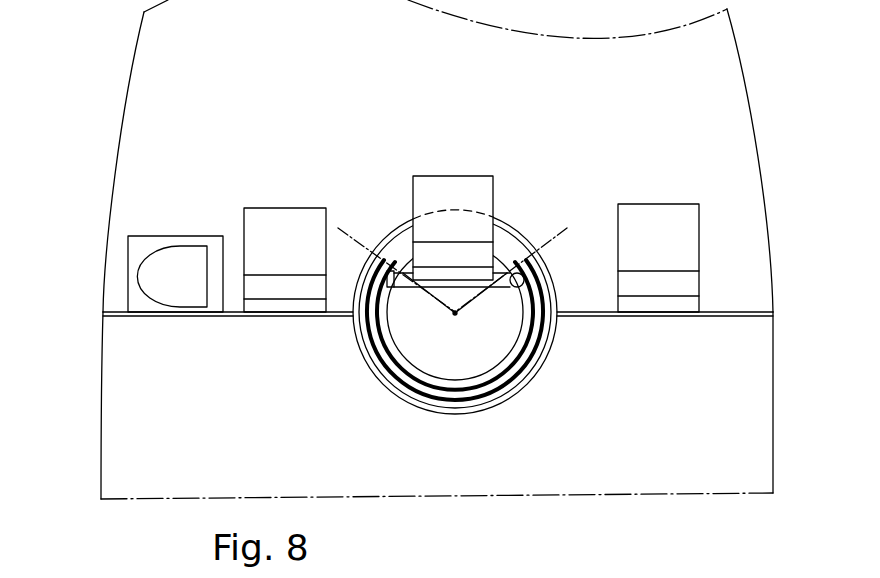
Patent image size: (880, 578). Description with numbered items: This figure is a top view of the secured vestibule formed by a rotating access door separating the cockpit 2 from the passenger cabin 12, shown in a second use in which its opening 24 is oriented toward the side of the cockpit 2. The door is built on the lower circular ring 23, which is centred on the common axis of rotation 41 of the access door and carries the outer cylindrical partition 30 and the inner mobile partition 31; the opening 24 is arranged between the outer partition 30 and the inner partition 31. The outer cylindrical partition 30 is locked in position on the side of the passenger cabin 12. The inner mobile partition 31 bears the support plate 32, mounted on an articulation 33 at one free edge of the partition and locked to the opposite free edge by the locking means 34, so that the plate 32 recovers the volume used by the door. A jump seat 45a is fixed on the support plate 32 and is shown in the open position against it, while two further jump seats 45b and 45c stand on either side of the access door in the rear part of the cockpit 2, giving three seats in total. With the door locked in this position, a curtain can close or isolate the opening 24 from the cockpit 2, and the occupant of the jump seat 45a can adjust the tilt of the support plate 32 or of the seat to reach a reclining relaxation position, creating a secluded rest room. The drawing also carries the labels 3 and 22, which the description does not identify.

The cockpit 2 is at (130, 135).
The component box 3 is at (233, 318).
The passenger cabin 12 is at (115, 431).
The spool core 22 is at (455, 312).
The lower circular ring 23 is at (398, 245).
The opening 24 is at (515, 243).
The outer cylindrical partition 30 is at (378, 362).
The inner mobile partition 31 is at (428, 392).
The support plate 32 is at (455, 287).
The articulation 33 is at (530, 275).
The locking means 34 is at (388, 292).
The common axis of rotation 41 is at (455, 316).
The jump seat 45a is at (446, 176).
The jump seat 45b is at (663, 204).
The jump seat 45c is at (258, 208).